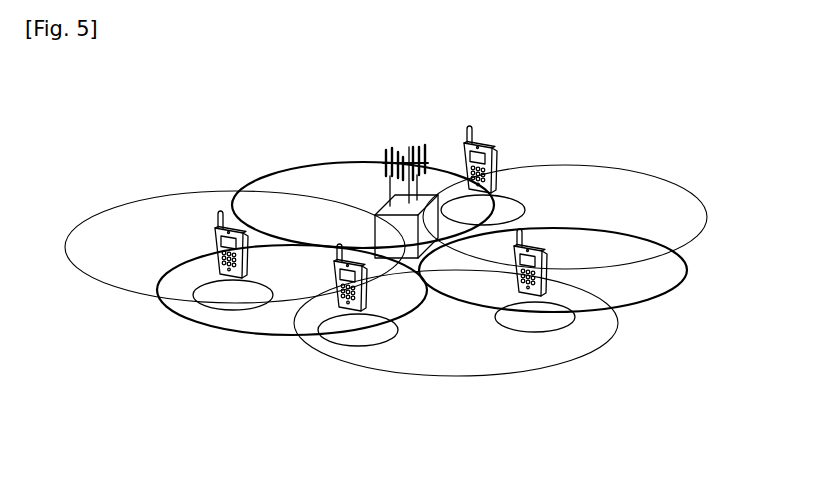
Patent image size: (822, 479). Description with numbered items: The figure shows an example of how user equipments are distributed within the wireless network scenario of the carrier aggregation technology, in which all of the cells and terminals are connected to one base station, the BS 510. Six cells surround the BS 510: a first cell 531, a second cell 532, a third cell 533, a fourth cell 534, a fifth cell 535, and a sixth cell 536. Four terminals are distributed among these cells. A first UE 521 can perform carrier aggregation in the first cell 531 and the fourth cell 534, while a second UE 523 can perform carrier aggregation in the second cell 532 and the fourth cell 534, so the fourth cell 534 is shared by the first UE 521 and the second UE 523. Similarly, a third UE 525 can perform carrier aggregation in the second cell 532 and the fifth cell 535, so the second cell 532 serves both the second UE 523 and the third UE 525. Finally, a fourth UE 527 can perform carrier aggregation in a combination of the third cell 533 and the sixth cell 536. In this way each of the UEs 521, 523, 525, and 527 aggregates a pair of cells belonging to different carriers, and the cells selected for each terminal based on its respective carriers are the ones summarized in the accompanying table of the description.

The base station 510 is at (410, 142).
The first UE 521 is at (213, 250).
The second UE 523 is at (333, 313).
The third UE 525 is at (572, 305).
The fourth UE 527 is at (473, 130).
The first cell 531 is at (80, 181).
The second cell 532 is at (470, 428).
The third cell 533 is at (693, 134).
The fourth cell 534 is at (176, 349).
The fifth cell 535 is at (743, 268).
The sixth cell 536 is at (332, 96).